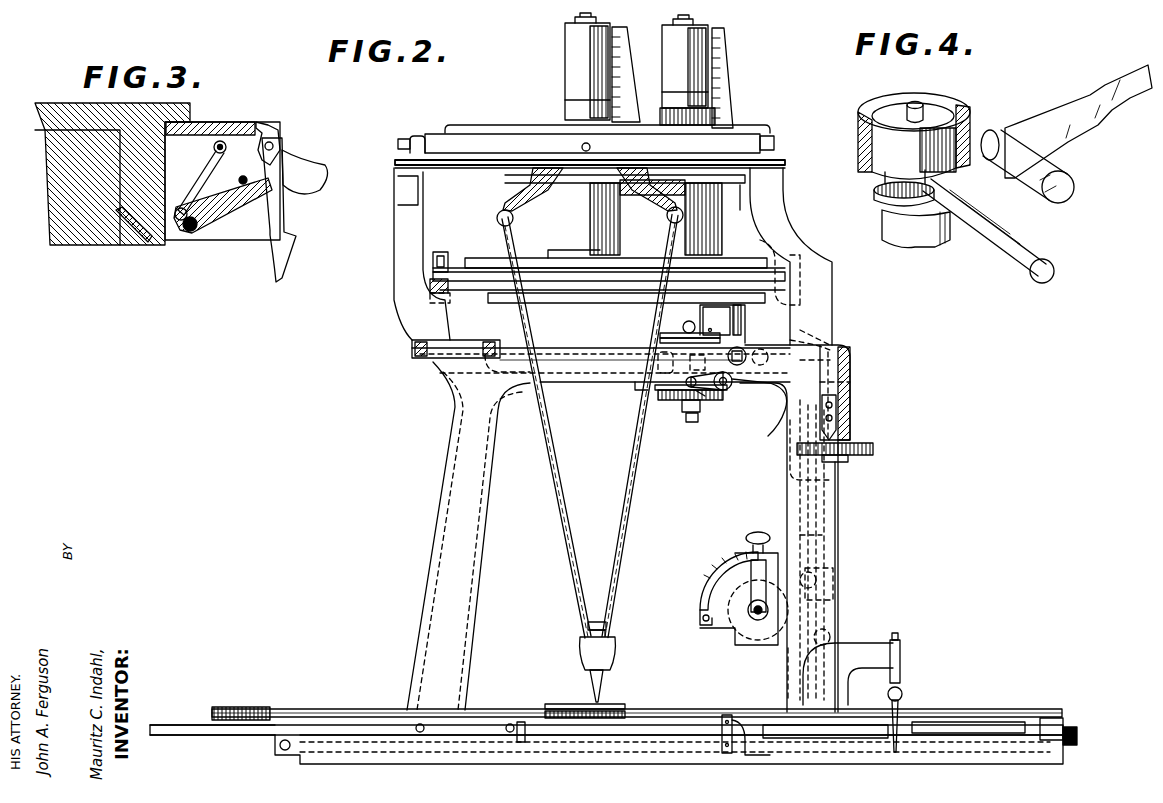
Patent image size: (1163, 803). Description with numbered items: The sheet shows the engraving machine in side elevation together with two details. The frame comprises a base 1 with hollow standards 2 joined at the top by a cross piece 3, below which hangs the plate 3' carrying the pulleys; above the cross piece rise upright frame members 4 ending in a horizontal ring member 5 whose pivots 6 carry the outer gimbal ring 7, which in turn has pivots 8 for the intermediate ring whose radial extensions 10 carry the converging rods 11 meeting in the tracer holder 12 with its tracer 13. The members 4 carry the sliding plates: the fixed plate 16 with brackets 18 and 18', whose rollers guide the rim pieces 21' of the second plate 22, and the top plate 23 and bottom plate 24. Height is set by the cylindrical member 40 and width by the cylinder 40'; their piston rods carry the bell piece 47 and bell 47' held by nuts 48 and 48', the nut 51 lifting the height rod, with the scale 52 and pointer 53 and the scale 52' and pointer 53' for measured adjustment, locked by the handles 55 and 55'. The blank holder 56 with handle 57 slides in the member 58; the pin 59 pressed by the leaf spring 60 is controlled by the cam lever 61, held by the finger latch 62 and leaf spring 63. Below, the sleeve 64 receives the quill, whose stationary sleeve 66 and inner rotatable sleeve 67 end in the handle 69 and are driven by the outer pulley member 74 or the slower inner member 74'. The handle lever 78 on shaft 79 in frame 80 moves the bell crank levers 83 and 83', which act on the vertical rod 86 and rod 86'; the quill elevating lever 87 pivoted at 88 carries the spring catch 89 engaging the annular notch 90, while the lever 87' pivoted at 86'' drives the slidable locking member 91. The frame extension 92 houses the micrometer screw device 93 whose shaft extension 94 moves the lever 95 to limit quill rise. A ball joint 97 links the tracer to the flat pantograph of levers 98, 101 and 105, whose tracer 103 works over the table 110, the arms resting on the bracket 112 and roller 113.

In FIG. 2, the base 1 is at (613, 739).
In FIG. 2, the hollow standards 2 is at (440, 540).
In FIG. 2, the cross piece 3 is at (601, 380).
In FIG. 2, the plate 3' is at (635, 404).
In FIG. 2, the upright frame members 4 is at (395, 247).
In FIG. 2, the horizontal ring member 5 is at (745, 142).
In FIG. 2, the pivots 6 is at (775, 143).
In FIG. 2, the outer gimbal ring 7 is at (477, 133).
In FIG. 2, the pivots 8 is at (590, 147).
In FIG. 2, the radial extensions 10 is at (525, 200).
In FIG. 2, the converging rods 11 is at (612, 500).
In FIG. 2, the tracer holder 12 is at (585, 652).
In FIG. 2, the tracer 13 is at (601, 700).
In FIG. 2, the fixed plate 16 is at (470, 288).
In FIG. 2, the brackets 18 is at (823, 276).
In FIG. 2, the brackets 18' is at (450, 235).
In FIG. 2, the rim pieces 21' is at (396, 299).
In FIG. 2, the second plate 22 is at (460, 272).
In FIG. 2, the top plate 23 is at (482, 258).
In FIG. 2, the bottom plate 24 is at (500, 303).
In FIG. 2, the cylindrical member 40 is at (723, 219).
In FIG. 2, the cylinder 40' is at (590, 219).
In FIG. 2, the bell piece 47 is at (700, 50).
In FIG. 2, the bell 47' is at (571, 87).
In FIG. 2, the nut 48 is at (678, 54).
In FIG. 2, the nut 48' is at (567, 63).
In FIG. 2, the nut 51 is at (712, 120).
In FIG. 2, the scale 52 is at (738, 78).
In FIG. 2, the scale 52' is at (637, 74).
In FIG. 2, the pointer 53 is at (738, 91).
In FIG. 2, the pointer 53' is at (639, 94).
In FIG. 2, the handle 55 is at (683, 199).
In FIG. 2, the handle 55' is at (625, 160).
In FIG. 3, the holder 56 is at (82, 235).
In FIG. 2, the holder 56 is at (700, 318).
In FIG. 2, the handle 57 is at (683, 330).
In FIG. 3, the member 58 is at (190, 105).
In FIG. 2, the member 58 is at (660, 314).
In FIG. 3, the pin 59 is at (136, 245).
In FIG. 3, the leaf spring 60 is at (193, 183).
In FIG. 3, the cam lever 61 is at (302, 168).
In FIG. 2, the cam lever 61 is at (742, 320).
In FIG. 3, the finger latch 62 is at (280, 224).
In FIG. 3, the leaf spring 63 is at (262, 137).
In FIG. 4, the sleeve 64 is at (968, 112).
In FIG. 4, the stationary sleeve 66 is at (930, 150).
In FIG. 4, the inner rotatable sleeve 67 is at (884, 108).
In FIG. 2, the handle 69 is at (690, 423).
In FIG. 2, the outer pulley member 74 is at (694, 408).
In FIG. 2, the inner member of larger pulley 74' is at (688, 409).
In FIG. 2, the handle lever 78 is at (752, 532).
In FIG. 2, the shaft 79 is at (755, 620).
In FIG. 2, the frame 80 is at (720, 620).
In FIG. 2, the bell crank lever 83 is at (836, 643).
In FIG. 2, the bell crank lever 83' is at (841, 582).
In FIG. 2, the vertical rod 86 is at (779, 419).
In FIG. 2, the rod 86' is at (839, 535).
In FIG. 2, the pivot 86'' is at (832, 323).
In FIG. 2, the quill elevating lever 87 is at (722, 395).
In FIG. 4, the quill elevating lever 87 is at (1078, 129).
In FIG. 2, the lever 87' is at (839, 333).
In FIG. 2, the pivot 88 is at (728, 390).
In FIG. 4, the pivot 88 is at (1066, 195).
In FIG. 2, the spring catch 89 is at (698, 400).
In FIG. 4, the spring catch 89 is at (1040, 282).
In FIG. 4, the annular notch 90 is at (880, 186).
In FIG. 2, the slidable locking member 91 is at (770, 400).
In FIG. 2, the extension 92 is at (852, 370).
In FIG. 2, the micrometer screw device 93 is at (855, 445).
In FIG. 2, the shaft extension 94 is at (852, 385).
In FIG. 2, the lever 95 is at (850, 355).
In FIG. 2, the ball joint 97 is at (625, 709).
In FIG. 2, the lever 98 is at (240, 708).
In FIG. 2, the lever 101 is at (338, 710).
In FIG. 2, the tracer 103 is at (902, 695).
In FIG. 2, the lever 105 is at (550, 704).
In FIG. 2, the table 110 is at (950, 712).
In FIG. 2, the bracket 112 is at (205, 727).
In FIG. 2, the roller 113 is at (583, 726).